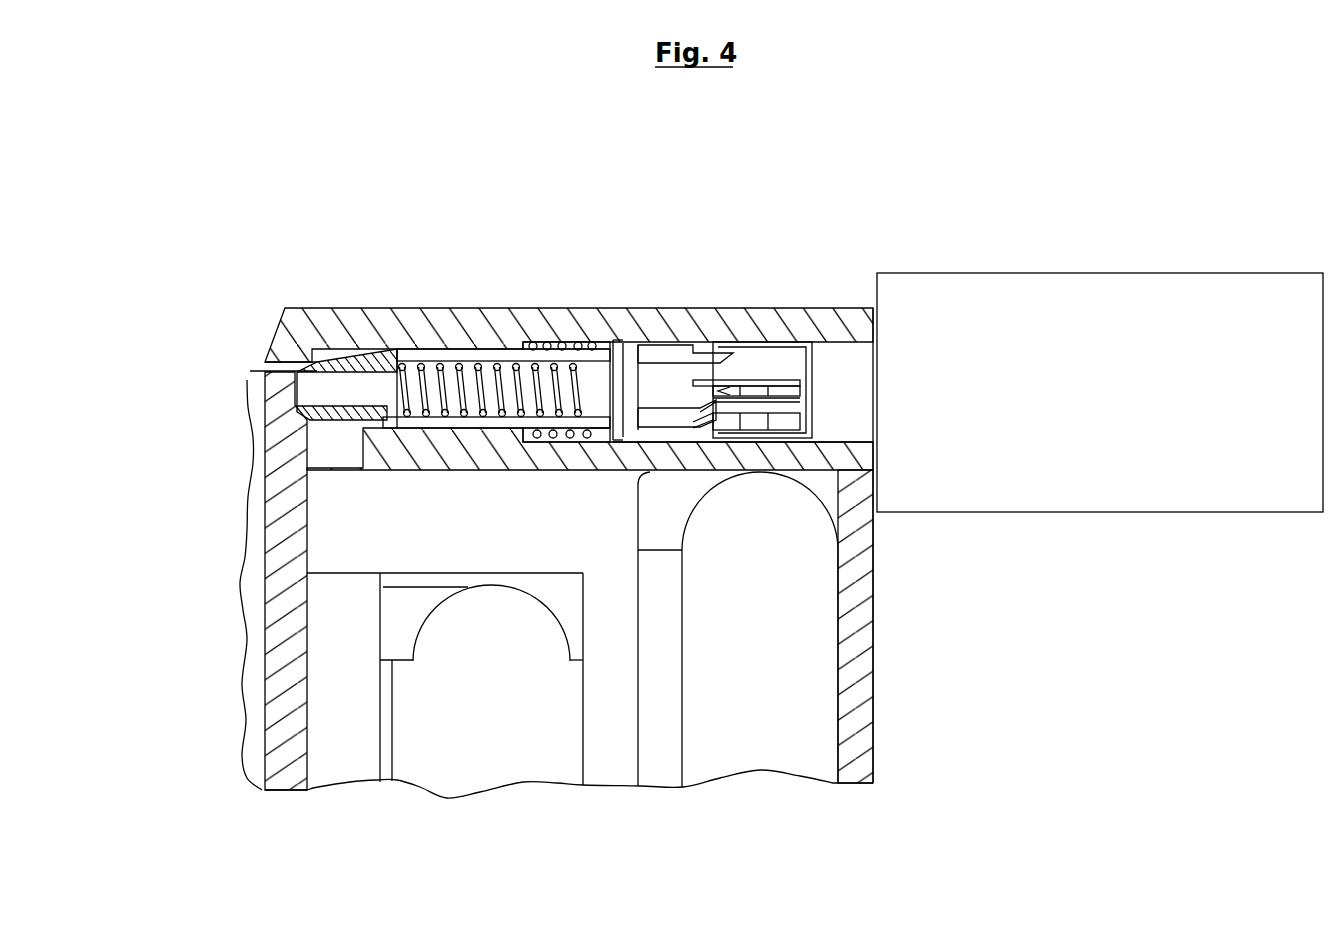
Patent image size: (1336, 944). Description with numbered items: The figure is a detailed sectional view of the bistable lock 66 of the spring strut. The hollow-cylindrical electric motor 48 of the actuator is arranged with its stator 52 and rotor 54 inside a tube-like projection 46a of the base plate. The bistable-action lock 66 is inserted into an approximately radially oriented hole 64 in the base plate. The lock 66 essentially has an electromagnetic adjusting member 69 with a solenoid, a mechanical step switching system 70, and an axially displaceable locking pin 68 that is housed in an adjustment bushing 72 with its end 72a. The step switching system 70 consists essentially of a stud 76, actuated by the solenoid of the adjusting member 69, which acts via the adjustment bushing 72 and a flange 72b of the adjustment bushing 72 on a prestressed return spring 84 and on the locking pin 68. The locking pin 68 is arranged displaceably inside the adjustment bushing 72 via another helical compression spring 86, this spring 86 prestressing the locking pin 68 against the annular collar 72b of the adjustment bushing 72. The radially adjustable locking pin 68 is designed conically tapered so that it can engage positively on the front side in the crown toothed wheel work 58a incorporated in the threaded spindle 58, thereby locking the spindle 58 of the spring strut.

The tube-like projection 46a is at (860, 748).
The electric motor 48 is at (733, 808).
The stator 52 is at (782, 684).
The rotor 54 is at (493, 719).
The threaded spindle 58 is at (307, 745).
The crown toothed wheel work 58a is at (253, 383).
The hole 64 is at (663, 438).
The bistable-action lock 66 is at (472, 328).
The locking pin 68 is at (356, 387).
The electromagnetic adjusting member 69 is at (1098, 345).
The mechanical step switching system 70 is at (678, 353).
The adjustment bushing 72 is at (510, 345).
The first end of tube 72a is at (388, 352).
The flange 72b is at (595, 445).
The stud 76 is at (753, 362).
The return spring 84 is at (560, 347).
The helical compression spring 86 is at (435, 355).